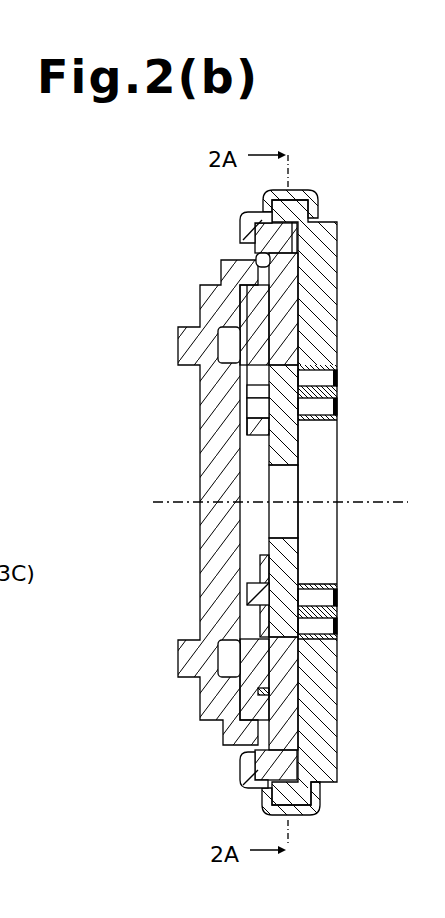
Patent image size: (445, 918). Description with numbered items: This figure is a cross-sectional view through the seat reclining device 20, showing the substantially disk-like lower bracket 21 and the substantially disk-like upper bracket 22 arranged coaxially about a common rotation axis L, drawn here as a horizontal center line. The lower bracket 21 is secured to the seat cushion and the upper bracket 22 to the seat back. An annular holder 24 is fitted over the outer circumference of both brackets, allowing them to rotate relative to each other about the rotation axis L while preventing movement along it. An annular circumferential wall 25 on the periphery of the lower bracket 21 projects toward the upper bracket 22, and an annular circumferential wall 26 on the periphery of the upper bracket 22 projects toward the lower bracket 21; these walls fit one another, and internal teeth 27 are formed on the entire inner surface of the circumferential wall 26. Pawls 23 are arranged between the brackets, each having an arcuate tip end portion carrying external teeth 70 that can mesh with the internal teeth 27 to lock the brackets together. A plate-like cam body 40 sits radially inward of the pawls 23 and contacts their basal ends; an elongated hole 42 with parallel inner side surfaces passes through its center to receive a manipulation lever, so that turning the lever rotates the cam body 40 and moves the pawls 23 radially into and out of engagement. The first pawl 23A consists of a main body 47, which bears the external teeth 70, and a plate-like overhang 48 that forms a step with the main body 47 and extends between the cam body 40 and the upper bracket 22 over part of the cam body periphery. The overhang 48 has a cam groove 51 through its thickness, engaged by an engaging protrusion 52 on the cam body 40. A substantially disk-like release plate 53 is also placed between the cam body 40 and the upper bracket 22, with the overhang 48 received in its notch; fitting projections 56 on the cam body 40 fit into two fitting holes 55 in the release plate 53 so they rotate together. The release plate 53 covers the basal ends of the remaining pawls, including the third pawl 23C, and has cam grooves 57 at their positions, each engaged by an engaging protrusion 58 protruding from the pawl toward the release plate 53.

The seat reclining device 20 is at (351, 191).
The lower bracket 21 is at (338, 330).
The upper bracket 22 is at (200, 478).
The pawls 23 is at (162, 516).
The first pawl 23A is at (247, 305).
The third pawl 23C is at (235, 728).
The holder 24 is at (320, 810).
The circumferential wall 25 is at (298, 204).
The circumferential wall 26 is at (262, 214).
The internal teeth 27 is at (260, 260).
The cam body 40 is at (298, 437).
The elongated hole 42 is at (285, 470).
The main body 47 is at (283, 272).
The overhang 48 is at (258, 427).
The cam groove 51 is at (258, 391).
The engaging protrusion 52 is at (258, 408).
The release plate 53 is at (260, 553).
The fitting holes 55 is at (270, 597).
The fitting projections 56 is at (250, 600).
The cam grooves 57 is at (228, 657).
The engaging protrusion 58 is at (258, 692).
The external teeth 70 is at (298, 245).
The rotation axis L is at (381, 502).